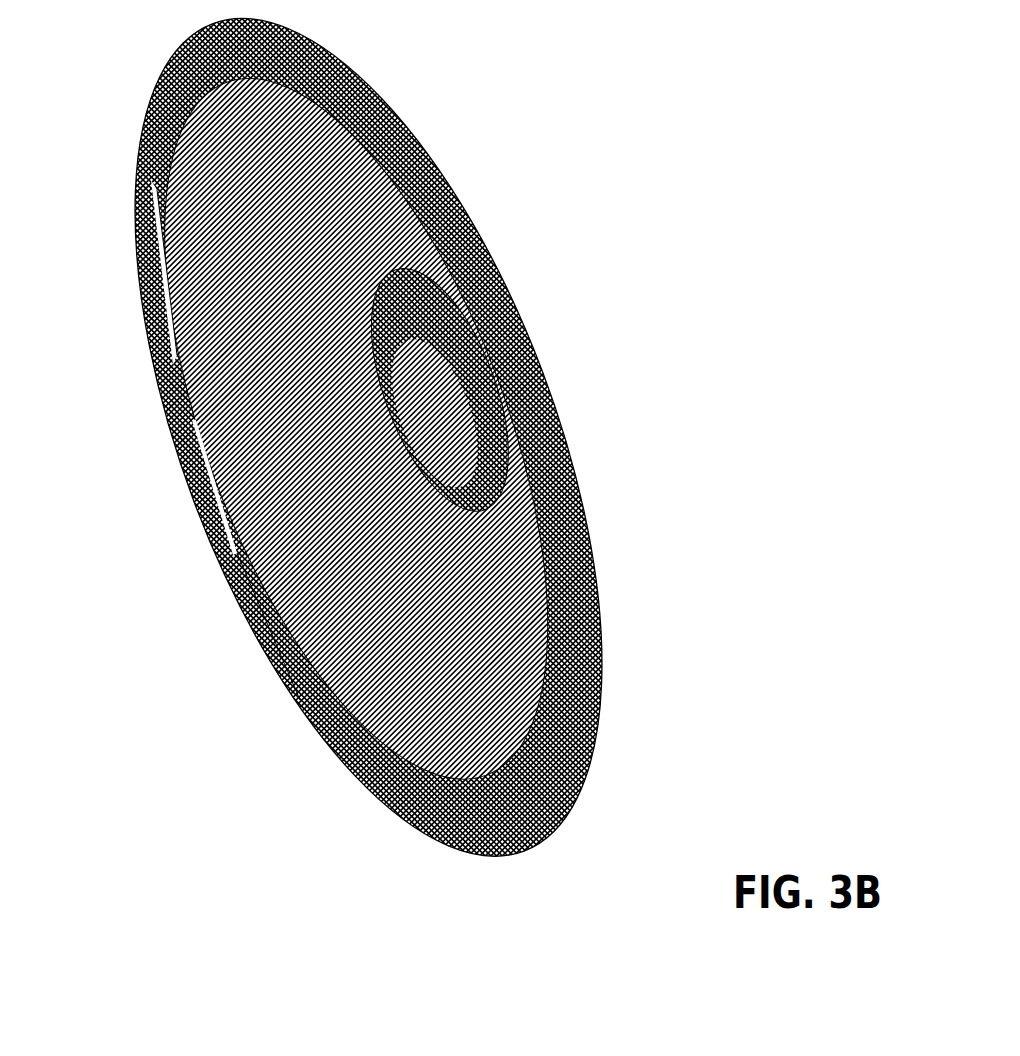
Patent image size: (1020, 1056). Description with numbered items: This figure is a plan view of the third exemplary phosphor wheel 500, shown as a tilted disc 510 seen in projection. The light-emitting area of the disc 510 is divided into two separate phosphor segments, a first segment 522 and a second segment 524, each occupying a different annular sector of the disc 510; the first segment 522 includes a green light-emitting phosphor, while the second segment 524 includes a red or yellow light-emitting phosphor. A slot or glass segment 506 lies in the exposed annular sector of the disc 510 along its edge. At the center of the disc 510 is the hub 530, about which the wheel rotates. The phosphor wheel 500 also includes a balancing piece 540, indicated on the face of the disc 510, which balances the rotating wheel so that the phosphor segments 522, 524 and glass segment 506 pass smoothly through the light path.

The phosphor wheel 500 is at (826, 183).
The second phosphor segment 524 is at (200, 138).
The glass segment 506 is at (175, 368).
The balancing piece 540 is at (293, 470).
The disc 510 is at (277, 630).
The first phosphor segment 522 is at (545, 780).
The hub 530 is at (470, 363).